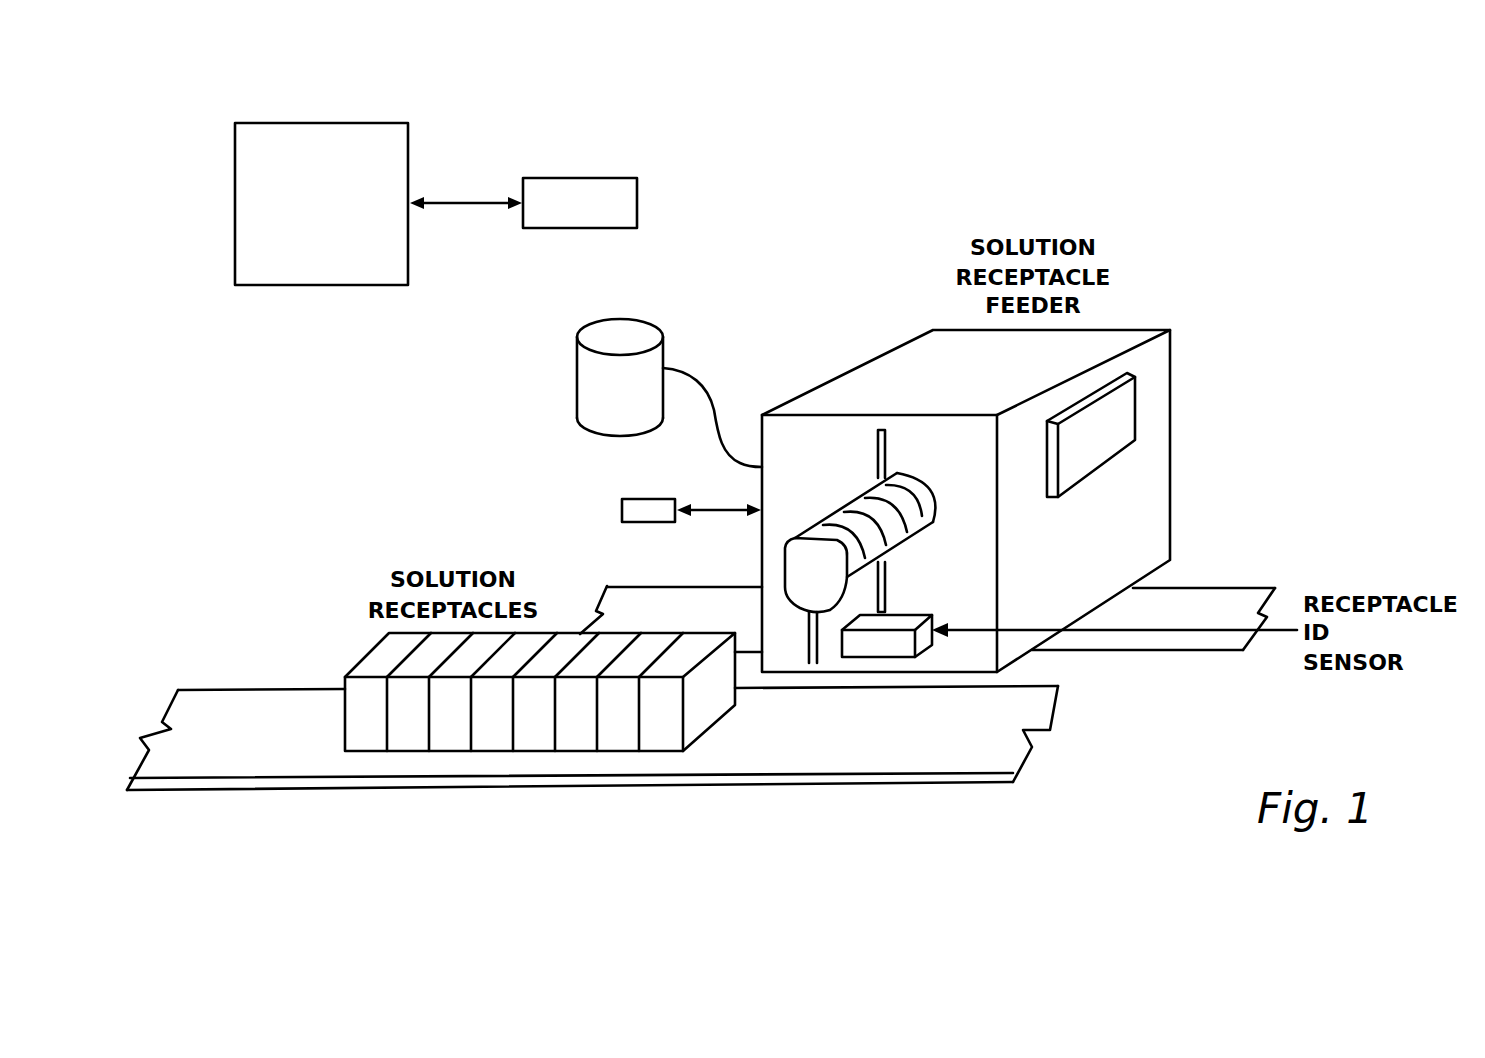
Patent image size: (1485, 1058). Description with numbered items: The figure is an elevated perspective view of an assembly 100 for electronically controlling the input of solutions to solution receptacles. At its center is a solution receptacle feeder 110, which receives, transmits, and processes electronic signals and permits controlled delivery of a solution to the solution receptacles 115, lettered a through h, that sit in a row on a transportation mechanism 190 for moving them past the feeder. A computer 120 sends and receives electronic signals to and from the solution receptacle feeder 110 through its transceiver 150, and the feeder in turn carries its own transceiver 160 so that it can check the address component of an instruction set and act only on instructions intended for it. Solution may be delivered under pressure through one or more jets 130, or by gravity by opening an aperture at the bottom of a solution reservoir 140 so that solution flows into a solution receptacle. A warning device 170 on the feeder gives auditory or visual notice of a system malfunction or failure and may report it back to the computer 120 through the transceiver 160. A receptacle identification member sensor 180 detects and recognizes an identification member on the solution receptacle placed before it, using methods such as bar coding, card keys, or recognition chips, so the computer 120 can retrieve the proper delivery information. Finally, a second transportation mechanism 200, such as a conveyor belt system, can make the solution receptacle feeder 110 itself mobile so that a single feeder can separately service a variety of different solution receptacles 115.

The assembly for electronically controlling the input of solutions 100 is at (1145, 196).
The solution receptacle feeder 110 is at (1172, 515).
The solution receptacles 115 is at (367, 652).
The computer 120 is at (323, 286).
The jets 130 is at (810, 637).
The solution reservoir 140 is at (578, 375).
The transceiver 150 is at (637, 203).
The transceiver 160 is at (622, 510).
The warning device 170 is at (1136, 402).
The receptacle identification member sensor 180 is at (903, 657).
The transportation mechanism 190 is at (990, 783).
The transportation mechanism 200 is at (1267, 587).